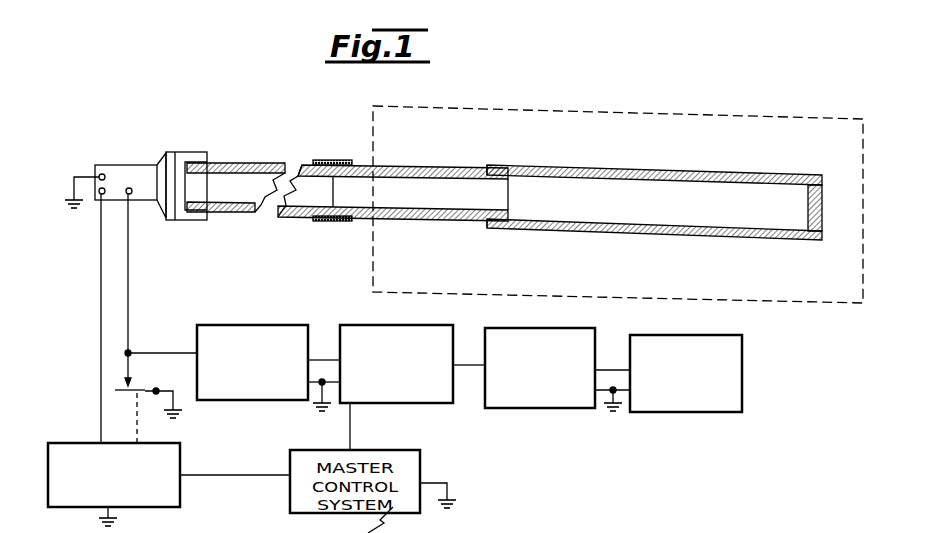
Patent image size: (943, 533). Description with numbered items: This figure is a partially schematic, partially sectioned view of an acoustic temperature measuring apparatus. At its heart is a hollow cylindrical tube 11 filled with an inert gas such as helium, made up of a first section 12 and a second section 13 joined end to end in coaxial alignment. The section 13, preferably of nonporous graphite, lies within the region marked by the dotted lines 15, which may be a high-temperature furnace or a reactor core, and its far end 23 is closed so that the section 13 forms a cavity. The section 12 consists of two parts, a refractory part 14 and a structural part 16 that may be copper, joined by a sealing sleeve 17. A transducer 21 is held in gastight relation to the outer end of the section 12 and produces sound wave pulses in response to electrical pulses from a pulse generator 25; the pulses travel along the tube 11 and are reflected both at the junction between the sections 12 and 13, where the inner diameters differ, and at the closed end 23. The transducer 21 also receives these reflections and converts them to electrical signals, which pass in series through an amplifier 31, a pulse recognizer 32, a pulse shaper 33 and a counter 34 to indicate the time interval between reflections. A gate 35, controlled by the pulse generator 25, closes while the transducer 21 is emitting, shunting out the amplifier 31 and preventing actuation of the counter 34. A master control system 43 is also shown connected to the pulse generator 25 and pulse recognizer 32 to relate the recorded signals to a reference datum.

The tube 11 is at (479, 231).
The first section 12 is at (302, 219).
The second section 13 is at (654, 219).
The part 14 is at (346, 162).
The dotted lines 15 is at (673, 113).
The part 16 is at (236, 164).
The sealing sleeve 17 is at (324, 169).
The transducer 21 is at (160, 163).
The end 23 is at (824, 186).
The pulse generator 25 is at (111, 466).
The amplifier 31 is at (252, 381).
The pulse recognizer 32 is at (396, 383).
The pulse shaper 33 is at (540, 394).
The counter 34 is at (686, 396).
The gate 35 is at (140, 390).
The master control system 43 is at (199, 529).